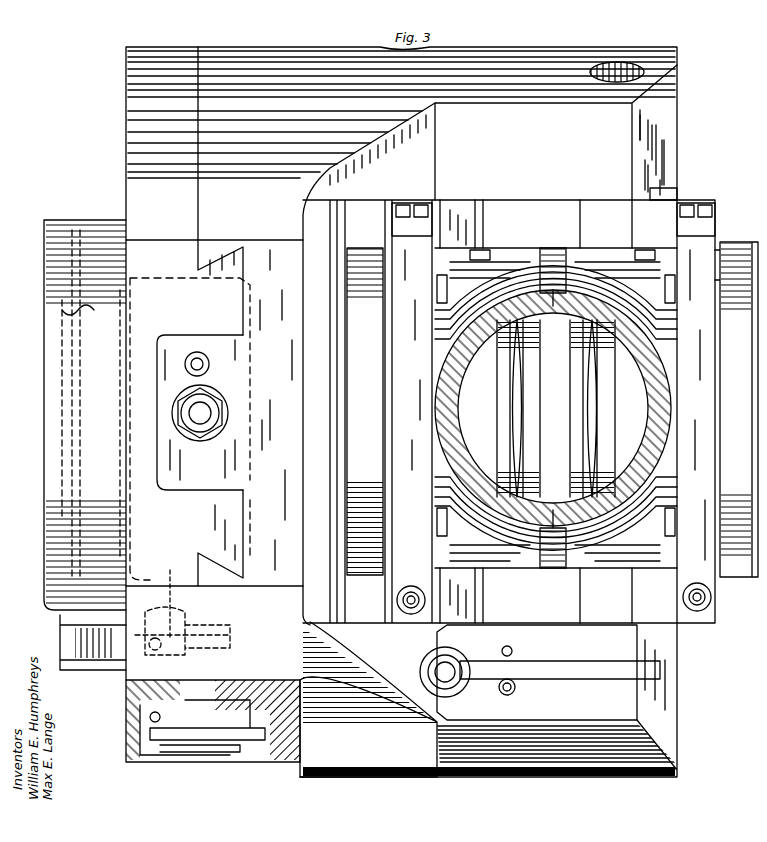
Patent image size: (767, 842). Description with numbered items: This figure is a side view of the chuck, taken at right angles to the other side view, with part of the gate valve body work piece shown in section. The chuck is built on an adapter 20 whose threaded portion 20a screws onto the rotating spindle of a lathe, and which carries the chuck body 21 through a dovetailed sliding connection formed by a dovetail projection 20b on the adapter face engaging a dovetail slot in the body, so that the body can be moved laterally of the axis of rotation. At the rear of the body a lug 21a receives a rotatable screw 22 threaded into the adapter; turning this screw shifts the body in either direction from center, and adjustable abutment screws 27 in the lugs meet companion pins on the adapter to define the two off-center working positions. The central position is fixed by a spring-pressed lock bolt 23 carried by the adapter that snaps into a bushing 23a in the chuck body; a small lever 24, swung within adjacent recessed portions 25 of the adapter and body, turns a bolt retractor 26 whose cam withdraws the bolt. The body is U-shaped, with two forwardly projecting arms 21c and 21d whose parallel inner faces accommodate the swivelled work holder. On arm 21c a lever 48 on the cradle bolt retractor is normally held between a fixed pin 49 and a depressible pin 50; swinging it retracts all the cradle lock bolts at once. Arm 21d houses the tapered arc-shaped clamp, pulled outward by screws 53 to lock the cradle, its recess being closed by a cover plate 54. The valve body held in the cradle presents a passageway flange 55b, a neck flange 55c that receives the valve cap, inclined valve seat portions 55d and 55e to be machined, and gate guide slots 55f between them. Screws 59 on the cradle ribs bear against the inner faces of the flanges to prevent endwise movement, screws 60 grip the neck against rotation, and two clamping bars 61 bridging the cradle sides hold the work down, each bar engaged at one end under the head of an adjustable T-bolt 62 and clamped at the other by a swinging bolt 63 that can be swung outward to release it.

The adapter 20 is at (140, 133).
The threaded portion 20a is at (93, 225).
The dovetail projection 20b is at (225, 240).
The chuck body 21 is at (222, 77).
The lug 21a is at (175, 383).
The arm 21c is at (650, 700).
The arm 21d is at (660, 140).
The screw 22 is at (215, 422).
The lock bolt 23 is at (168, 597).
The bushing 23a is at (205, 660).
The lever 24 is at (225, 745).
The recessed portions 25 is at (190, 755).
The bolt retractor 26 is at (200, 690).
The screws 27 is at (210, 364).
The lever 48 is at (582, 682).
The fixed pin 49 is at (512, 652).
The depressible pin 50 is at (515, 690).
The screws 53 is at (620, 70).
The cover plate 54 is at (668, 194).
The flange 55b is at (355, 430).
The flange 55c is at (553, 314).
The valve seat portion 55d is at (517, 405).
The valve seat portion 55e is at (590, 415).
The slots 55f is at (554, 508).
The screws 59 is at (665, 290).
The screws 60 is at (530, 257).
The clamping bars 61 is at (665, 360).
The T-bolt 62 is at (400, 222).
The swinging bolt 63 is at (397, 600).